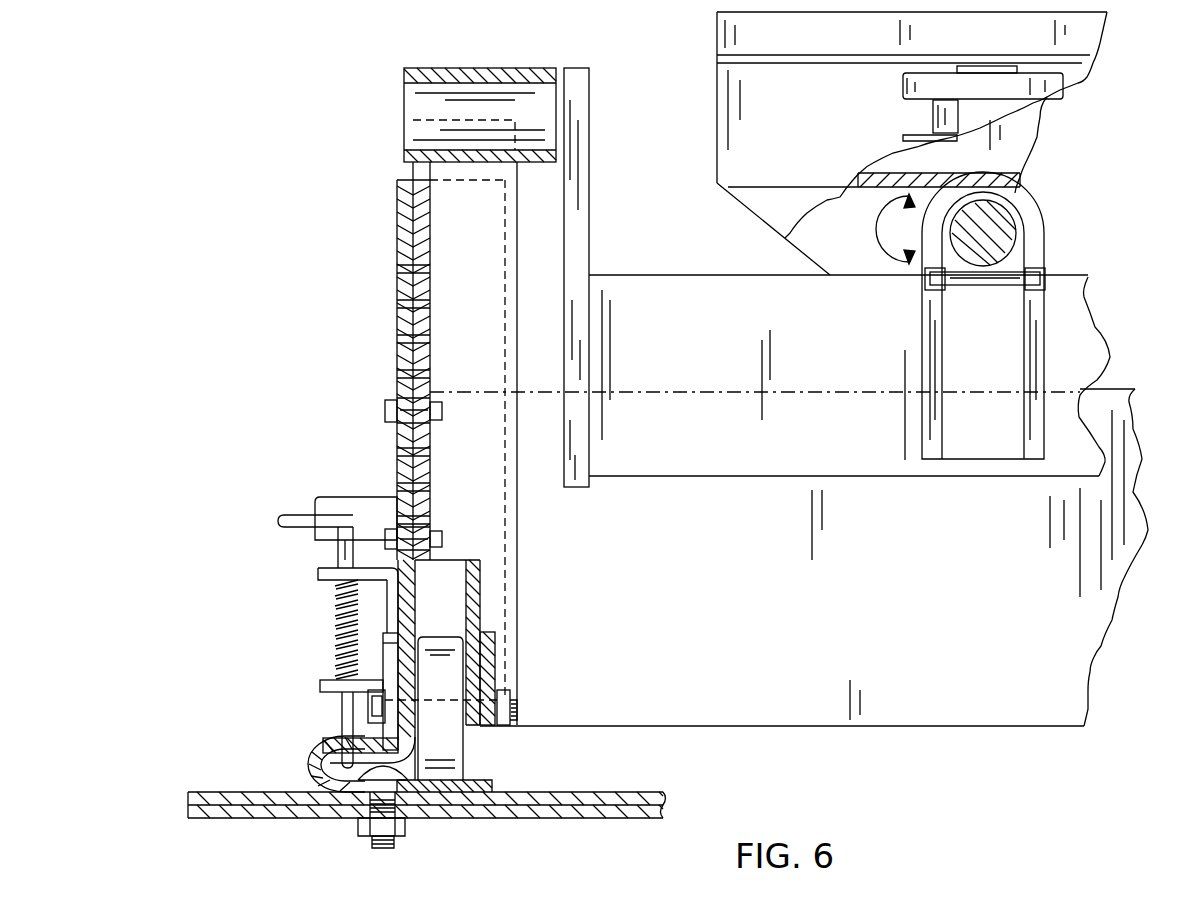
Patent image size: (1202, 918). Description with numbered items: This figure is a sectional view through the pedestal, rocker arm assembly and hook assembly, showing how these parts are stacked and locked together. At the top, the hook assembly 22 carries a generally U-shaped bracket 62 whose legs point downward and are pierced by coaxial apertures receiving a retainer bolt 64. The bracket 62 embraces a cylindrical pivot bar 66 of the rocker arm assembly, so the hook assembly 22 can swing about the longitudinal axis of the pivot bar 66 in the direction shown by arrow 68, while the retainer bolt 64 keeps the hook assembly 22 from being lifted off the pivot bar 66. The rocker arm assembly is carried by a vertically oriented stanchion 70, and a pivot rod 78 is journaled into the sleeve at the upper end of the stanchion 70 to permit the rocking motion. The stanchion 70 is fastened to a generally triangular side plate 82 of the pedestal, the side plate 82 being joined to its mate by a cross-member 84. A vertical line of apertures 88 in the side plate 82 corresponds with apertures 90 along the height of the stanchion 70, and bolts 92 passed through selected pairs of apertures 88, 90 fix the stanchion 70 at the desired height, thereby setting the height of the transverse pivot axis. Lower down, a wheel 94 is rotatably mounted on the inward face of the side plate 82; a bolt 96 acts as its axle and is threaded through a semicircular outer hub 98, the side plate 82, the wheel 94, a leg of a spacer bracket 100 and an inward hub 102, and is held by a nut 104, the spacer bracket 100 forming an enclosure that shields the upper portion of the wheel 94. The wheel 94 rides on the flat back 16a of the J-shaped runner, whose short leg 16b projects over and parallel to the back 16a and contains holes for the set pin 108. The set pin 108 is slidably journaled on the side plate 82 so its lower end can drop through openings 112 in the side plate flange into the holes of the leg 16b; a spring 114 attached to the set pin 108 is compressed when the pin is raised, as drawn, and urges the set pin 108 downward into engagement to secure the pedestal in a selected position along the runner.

The hook assembly 22 is at (1091, 95).
The U-shaped bracket 62 is at (1013, 205).
The retainer bolt 64 is at (985, 285).
The pivot bar 66 is at (1000, 225).
The arrow 68 is at (897, 228).
The stanchion 70 is at (500, 548).
The pivot rod 78 is at (437, 104).
The side plate 82 is at (395, 228).
The cross-member 84 is at (958, 688).
The apertures 88 is at (397, 375).
The apertures 90 is at (430, 370).
The bolts 92 is at (440, 540).
The wheel 94 is at (455, 745).
The bolt 96 is at (483, 688).
The semicircular outer hub 98 is at (392, 655).
The spacer bracket 100 is at (480, 610).
The inward hub 102 is at (490, 660).
The nut 104 is at (505, 722).
The set pin 108 is at (340, 540).
The openings 112 is at (330, 752).
The spring 114 is at (340, 620).
The back 16a is at (463, 790).
The leg 16b is at (332, 740).